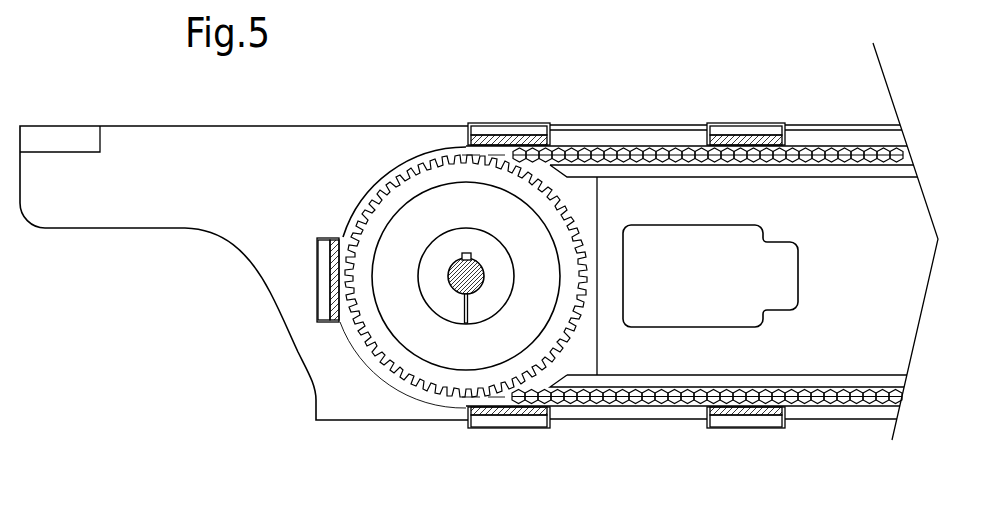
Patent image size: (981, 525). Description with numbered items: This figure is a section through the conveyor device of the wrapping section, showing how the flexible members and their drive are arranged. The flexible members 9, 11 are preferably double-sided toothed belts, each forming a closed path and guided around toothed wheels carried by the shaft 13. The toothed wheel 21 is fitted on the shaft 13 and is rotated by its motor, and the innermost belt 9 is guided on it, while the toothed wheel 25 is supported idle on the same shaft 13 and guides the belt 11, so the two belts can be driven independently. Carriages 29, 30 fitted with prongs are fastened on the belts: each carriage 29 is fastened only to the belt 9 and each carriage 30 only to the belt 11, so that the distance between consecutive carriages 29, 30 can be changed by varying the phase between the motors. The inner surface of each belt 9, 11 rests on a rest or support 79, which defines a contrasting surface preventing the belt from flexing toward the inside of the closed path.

The flexible member (belt) 9 is at (707, 283).
The flexible member (belt) 11 is at (848, 152).
The shaft 13 is at (467, 277).
The toothed wheel 21 is at (437, 276).
The toothed wheel 25 is at (413, 230).
The carriage 29 is at (520, 130).
The carriage 30 is at (720, 130).
The rest or support 79 is at (818, 172).